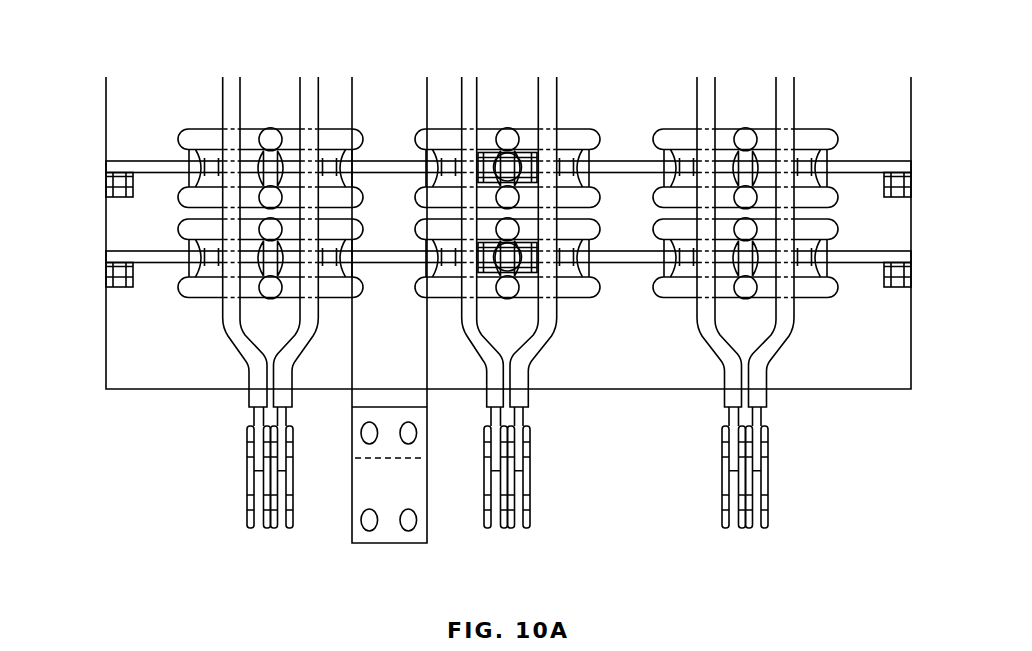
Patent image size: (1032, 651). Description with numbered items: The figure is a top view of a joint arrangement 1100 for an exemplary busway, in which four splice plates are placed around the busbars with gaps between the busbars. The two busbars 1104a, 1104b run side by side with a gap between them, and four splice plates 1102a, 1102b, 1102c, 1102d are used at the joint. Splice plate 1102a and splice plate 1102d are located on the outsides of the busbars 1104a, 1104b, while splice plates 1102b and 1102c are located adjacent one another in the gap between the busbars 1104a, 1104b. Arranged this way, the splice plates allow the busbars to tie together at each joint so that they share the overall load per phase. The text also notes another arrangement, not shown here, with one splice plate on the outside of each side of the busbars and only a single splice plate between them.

The joint arrangement 1100 is at (133, 38).
The splice plate 1102a is at (248, 517).
The splice plate 1102b is at (270, 528).
The splice plate 1102c is at (276, 528).
The splice plate 1102d is at (289, 528).
The busbar 1104a is at (259, 431).
The busbar 1104b is at (284, 421).